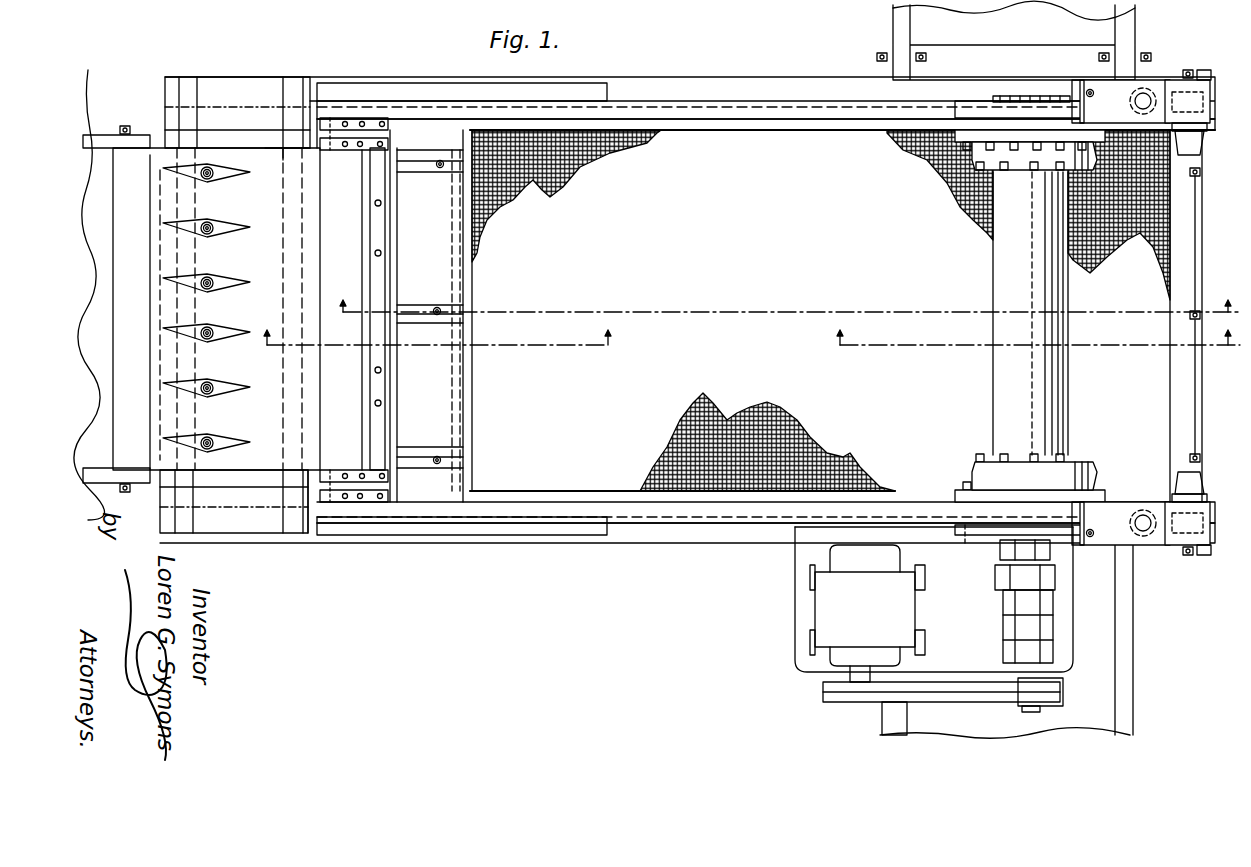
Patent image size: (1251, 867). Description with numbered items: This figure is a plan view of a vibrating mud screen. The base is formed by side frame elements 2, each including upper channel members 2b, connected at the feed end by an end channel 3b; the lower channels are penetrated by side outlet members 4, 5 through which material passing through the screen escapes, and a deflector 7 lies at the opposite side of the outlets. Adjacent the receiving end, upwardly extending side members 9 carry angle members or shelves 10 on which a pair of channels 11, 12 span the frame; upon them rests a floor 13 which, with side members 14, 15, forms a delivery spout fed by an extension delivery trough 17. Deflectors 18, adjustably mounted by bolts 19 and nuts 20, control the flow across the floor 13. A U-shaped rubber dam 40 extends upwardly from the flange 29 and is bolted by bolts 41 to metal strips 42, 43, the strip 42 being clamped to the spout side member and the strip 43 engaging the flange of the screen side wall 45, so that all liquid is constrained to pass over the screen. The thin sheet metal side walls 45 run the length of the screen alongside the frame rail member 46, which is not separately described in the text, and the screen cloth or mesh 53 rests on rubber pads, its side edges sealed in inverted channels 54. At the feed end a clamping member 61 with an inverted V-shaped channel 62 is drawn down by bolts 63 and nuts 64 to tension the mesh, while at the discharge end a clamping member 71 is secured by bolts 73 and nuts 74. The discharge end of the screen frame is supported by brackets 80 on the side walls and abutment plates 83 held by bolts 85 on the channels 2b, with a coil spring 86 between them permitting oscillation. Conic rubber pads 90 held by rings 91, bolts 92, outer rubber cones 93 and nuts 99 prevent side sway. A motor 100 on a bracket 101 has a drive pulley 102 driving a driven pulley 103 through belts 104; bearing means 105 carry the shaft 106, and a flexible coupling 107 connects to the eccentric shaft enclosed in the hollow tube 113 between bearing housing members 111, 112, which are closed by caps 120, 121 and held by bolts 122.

The side frame elements 2 is at (745, 80).
The upper channel members 2b is at (790, 92).
The end member channel 3b is at (160, 140).
The side outlet member 4 is at (1155, 660).
The side outlet member 5 is at (915, 40).
The deflector 7 is at (787, 312).
The side members 9 is at (240, 77).
The angle members or shelves 10 is at (165, 95).
The channel 11 is at (190, 95).
The channel 12 is at (300, 92).
The floor 13 is at (105, 140).
The side member 14 is at (275, 470).
The side member 15 is at (268, 145).
The extension delivery trough 17 is at (90, 140).
The deflectors 18 is at (225, 177).
The bolts 19 is at (205, 268).
The nuts 20 is at (213, 233).
The flange 29 is at (372, 232).
The U-shaped rubber member or dam 40 is at (372, 138).
The bolts 41 is at (362, 122).
The metal strip 42 is at (360, 142).
The metal strip 43 is at (372, 118).
The side walls 45 is at (690, 120).
The top plate 46 is at (640, 98).
The screen cloth or mesh 53 is at (535, 133).
The inverted channel 54 is at (775, 128).
The movable plate or clamping member 61 is at (472, 258).
The inverted V-shaped member or channel 62 is at (460, 229).
The bolts 63 is at (440, 160).
The nuts 64 is at (436, 166).
The clamping member 71 is at (1195, 228).
The securing bolts 73 is at (1200, 174).
The nuts 74 is at (1200, 185).
The brackets or angles 80 is at (1110, 95).
The metal abutment plates 83 is at (1087, 90).
The locking or securing bolt 85 is at (1080, 92).
The coil spring 86 is at (1150, 92).
The conic rubber pads 90 is at (1203, 145).
The positioning rings 91 is at (1207, 130).
The bolts 92 is at (1190, 70).
The outer rubber cones 93 is at (1200, 100).
The nut 99 is at (1205, 72).
The motor 100 is at (828, 607).
The shelf or bracket 101 is at (797, 600).
The drive pulley 102 is at (845, 703).
The driven pulley 103 is at (1045, 708).
The belts 104 is at (955, 702).
The bearing means 105 is at (1005, 645).
The shaft 106 is at (1031, 712).
The flexible coupling 107 is at (1000, 578).
The bearing housing member 111 is at (975, 468).
The bearing housing member 112 is at (980, 152).
The hollow tube or frame member 113 is at (993, 267).
The outer cap or closure 120 is at (955, 120).
The outer cap or closure 121 is at (995, 535).
The bolts 122 is at (1037, 150).